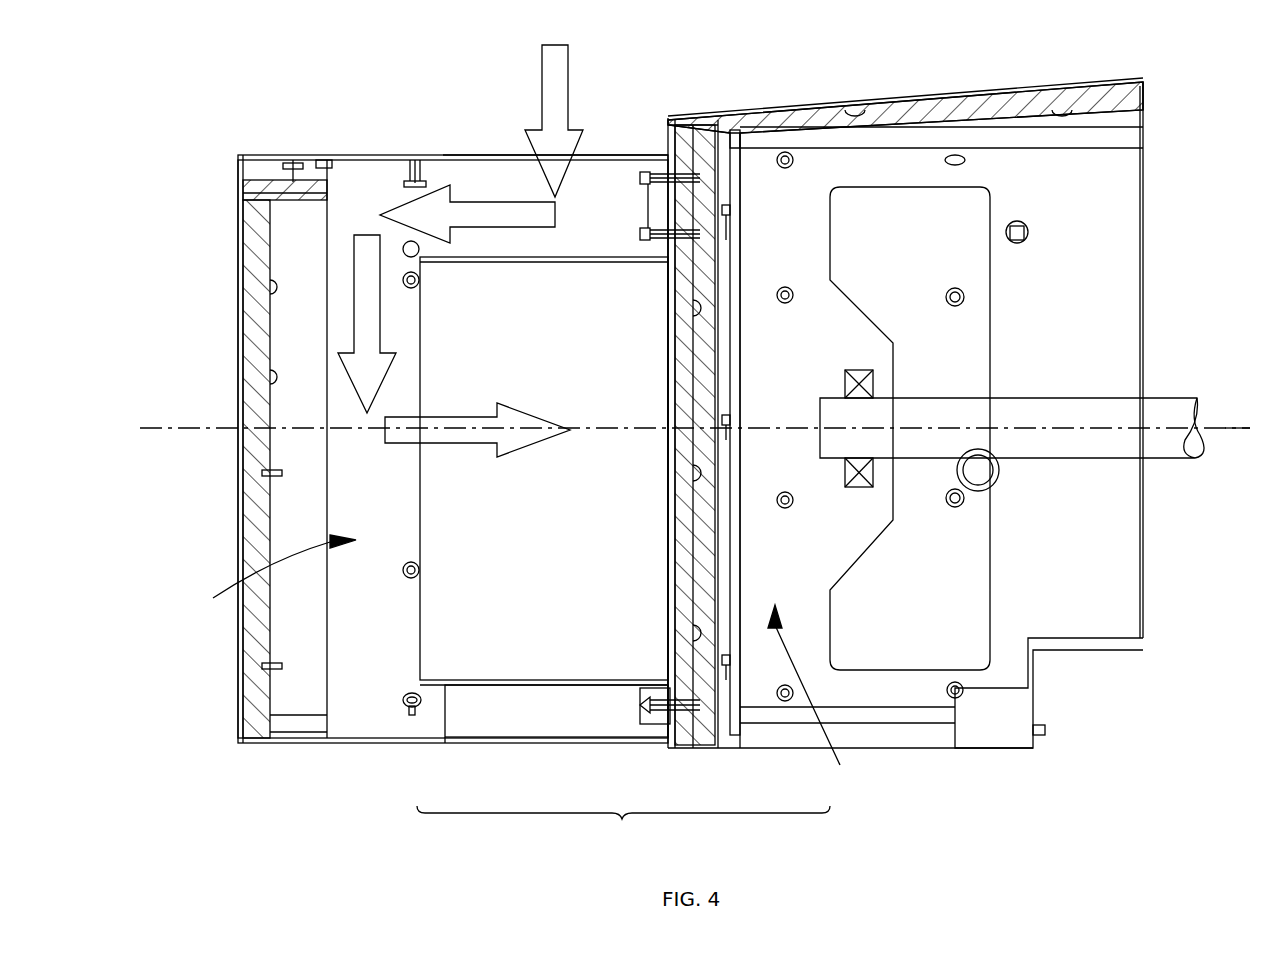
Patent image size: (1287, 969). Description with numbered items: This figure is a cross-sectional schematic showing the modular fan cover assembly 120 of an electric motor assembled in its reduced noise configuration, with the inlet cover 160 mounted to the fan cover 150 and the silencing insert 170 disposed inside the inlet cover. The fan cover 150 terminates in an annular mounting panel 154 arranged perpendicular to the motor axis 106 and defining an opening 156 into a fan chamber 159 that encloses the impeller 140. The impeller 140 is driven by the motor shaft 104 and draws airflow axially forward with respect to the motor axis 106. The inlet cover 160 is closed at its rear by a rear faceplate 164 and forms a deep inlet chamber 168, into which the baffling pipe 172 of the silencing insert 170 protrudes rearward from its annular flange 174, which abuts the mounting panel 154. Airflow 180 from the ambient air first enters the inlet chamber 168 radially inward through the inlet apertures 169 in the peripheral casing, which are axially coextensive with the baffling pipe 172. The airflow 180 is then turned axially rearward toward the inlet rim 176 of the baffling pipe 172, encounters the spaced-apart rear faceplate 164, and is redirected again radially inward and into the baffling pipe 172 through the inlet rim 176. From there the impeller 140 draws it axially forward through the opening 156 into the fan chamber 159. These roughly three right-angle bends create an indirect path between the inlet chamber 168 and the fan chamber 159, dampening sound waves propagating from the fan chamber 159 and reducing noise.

The motor shaft 104 is at (1180, 398).
The motor axis 106 is at (1235, 420).
The fan cover assembly 120 is at (623, 831).
The impeller 140 is at (898, 652).
The fan cover 150 is at (850, 104).
The mounting panel 154 is at (714, 195).
The opening 156 is at (672, 668).
The fan chamber 159 is at (814, 703).
The inlet cover 160 is at (243, 155).
The rear faceplate 164 is at (250, 360).
The inlet chamber 168 is at (265, 572).
The inlet apertures 169 is at (609, 140).
The silencing insert 170 is at (636, 255).
The baffling pipe 172 is at (565, 680).
The annular flange 174 is at (660, 712).
The inlet rim 176 is at (420, 673).
The airflow 180 is at (524, 200).